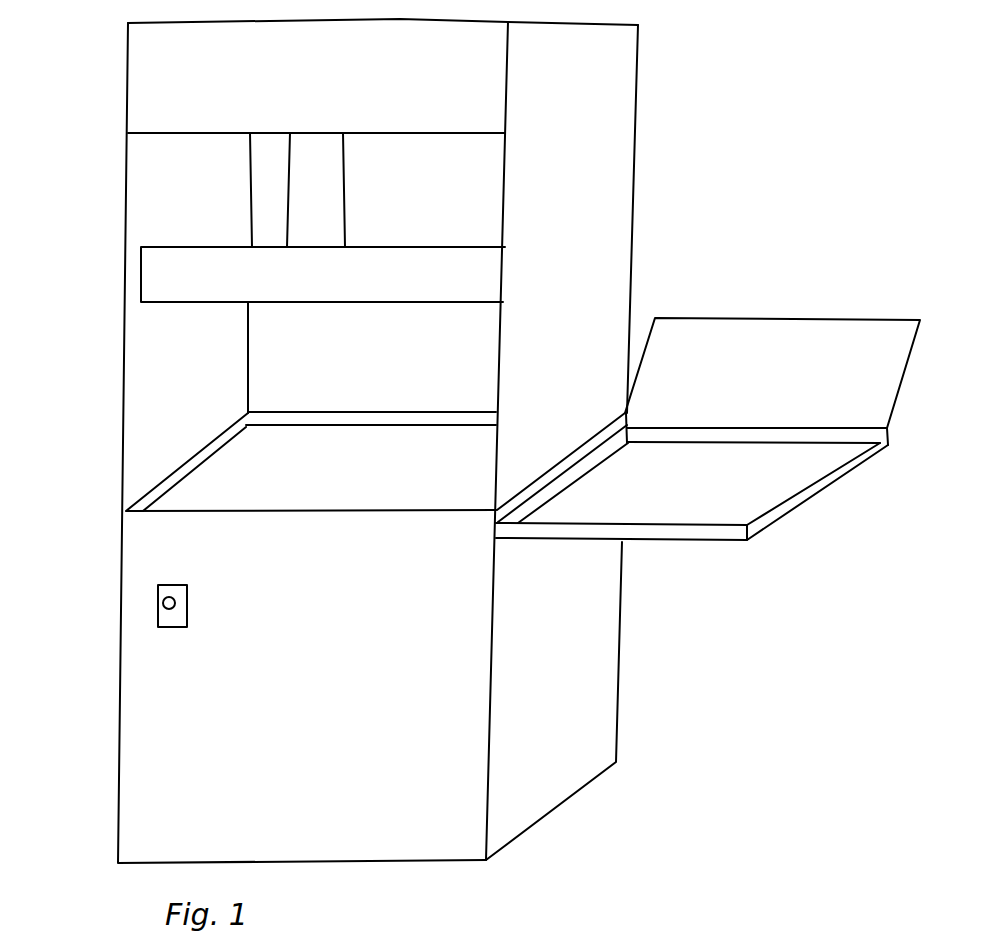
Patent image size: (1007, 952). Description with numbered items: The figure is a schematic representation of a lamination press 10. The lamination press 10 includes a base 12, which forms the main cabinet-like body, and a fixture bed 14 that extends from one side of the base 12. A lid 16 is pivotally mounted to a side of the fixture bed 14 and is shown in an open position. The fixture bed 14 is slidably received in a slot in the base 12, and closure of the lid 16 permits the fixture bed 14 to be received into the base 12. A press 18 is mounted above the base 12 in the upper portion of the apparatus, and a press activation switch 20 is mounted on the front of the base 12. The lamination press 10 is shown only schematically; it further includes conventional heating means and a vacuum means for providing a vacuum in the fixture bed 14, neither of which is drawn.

The lamination press 10 is at (652, 212).
The base 12 is at (522, 740).
The fixture bed 14 is at (727, 532).
The lid 16 is at (830, 332).
The press 18 is at (165, 288).
The press activation switch 20 is at (165, 620).